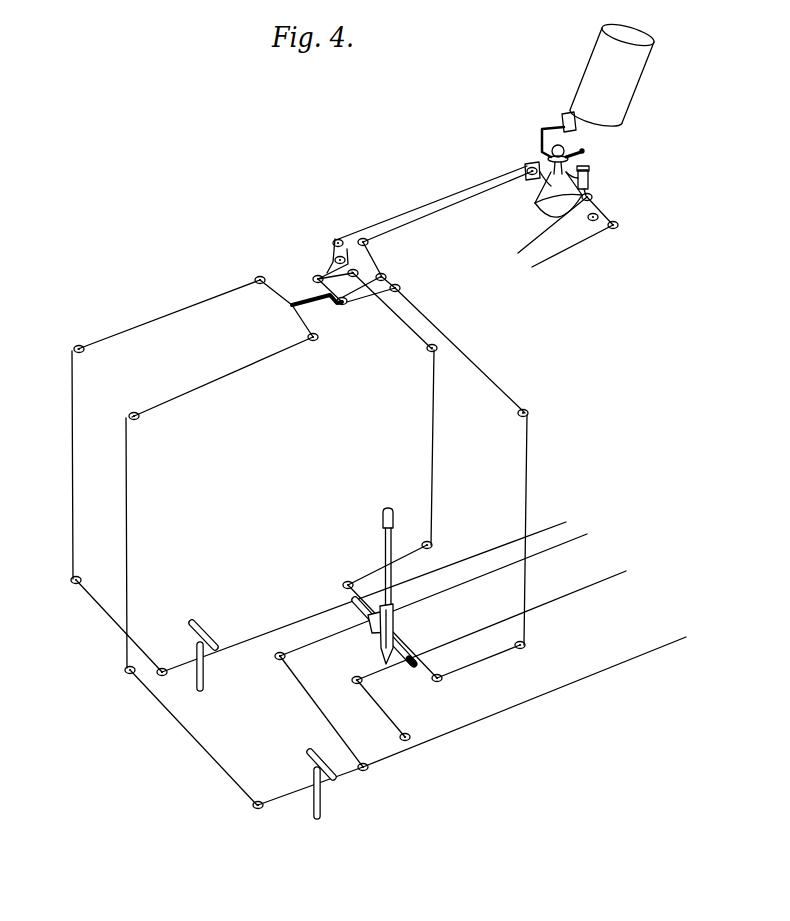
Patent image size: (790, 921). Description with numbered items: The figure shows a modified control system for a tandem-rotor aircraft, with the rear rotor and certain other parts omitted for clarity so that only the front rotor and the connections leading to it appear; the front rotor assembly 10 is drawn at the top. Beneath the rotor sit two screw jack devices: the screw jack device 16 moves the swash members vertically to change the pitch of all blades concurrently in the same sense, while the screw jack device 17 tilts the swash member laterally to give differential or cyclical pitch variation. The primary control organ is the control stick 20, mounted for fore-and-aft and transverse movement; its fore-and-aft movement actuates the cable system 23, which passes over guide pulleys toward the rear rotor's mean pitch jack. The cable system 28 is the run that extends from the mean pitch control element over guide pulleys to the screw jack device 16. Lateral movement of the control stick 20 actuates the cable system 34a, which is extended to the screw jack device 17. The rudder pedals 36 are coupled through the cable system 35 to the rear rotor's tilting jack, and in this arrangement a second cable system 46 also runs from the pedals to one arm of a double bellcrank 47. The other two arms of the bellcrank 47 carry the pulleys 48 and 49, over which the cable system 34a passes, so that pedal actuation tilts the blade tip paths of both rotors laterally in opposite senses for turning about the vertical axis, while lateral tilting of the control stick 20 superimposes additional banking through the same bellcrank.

The motor cylinder 10 is at (598, 60).
The screw jack device 16 is at (589, 182).
The screw jack device 17 is at (539, 180).
The control stick 20 is at (382, 514).
The cable system 23 is at (584, 672).
The cable system 28 is at (552, 238).
The cable system 34a is at (430, 205).
The cable system 35 is at (575, 524).
The rudder pedals 36 is at (203, 634).
The second cable system 46 is at (125, 643).
The double bellcrank 47 is at (321, 307).
The pulley 48 is at (328, 291).
The pulley 49 is at (320, 274).